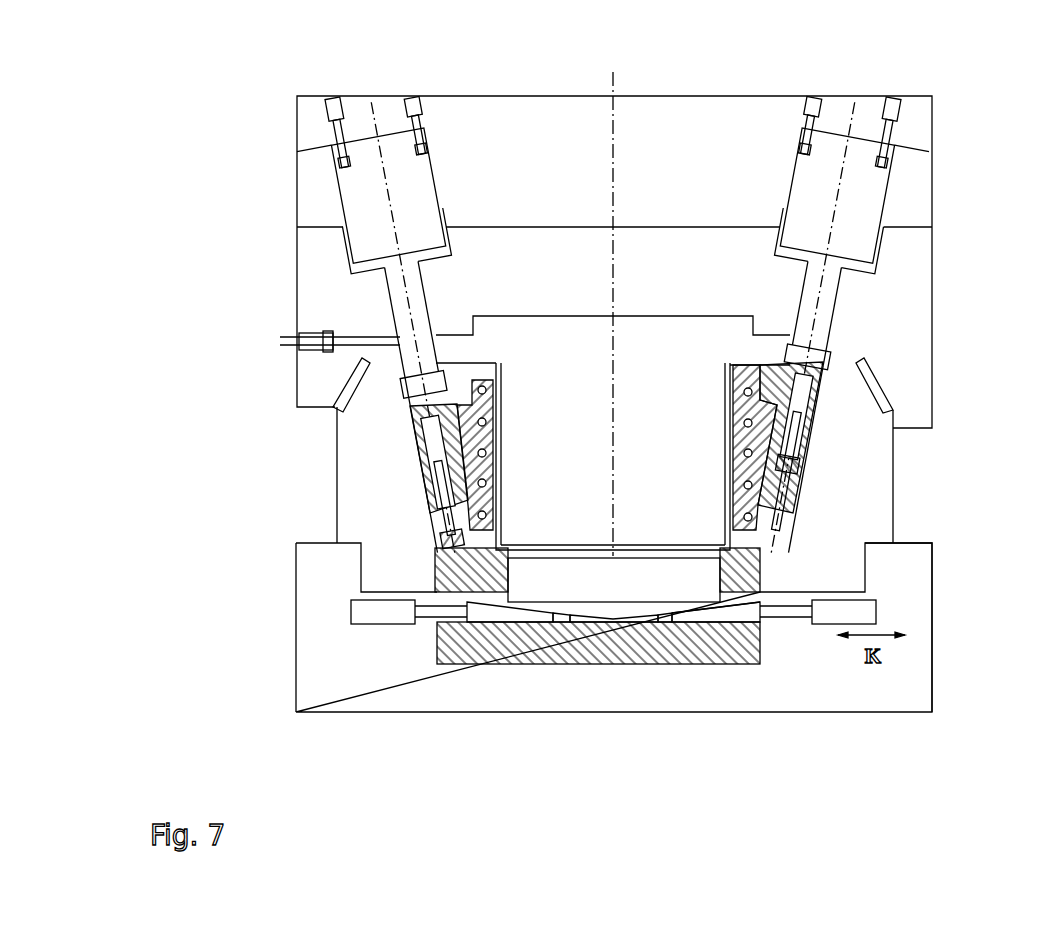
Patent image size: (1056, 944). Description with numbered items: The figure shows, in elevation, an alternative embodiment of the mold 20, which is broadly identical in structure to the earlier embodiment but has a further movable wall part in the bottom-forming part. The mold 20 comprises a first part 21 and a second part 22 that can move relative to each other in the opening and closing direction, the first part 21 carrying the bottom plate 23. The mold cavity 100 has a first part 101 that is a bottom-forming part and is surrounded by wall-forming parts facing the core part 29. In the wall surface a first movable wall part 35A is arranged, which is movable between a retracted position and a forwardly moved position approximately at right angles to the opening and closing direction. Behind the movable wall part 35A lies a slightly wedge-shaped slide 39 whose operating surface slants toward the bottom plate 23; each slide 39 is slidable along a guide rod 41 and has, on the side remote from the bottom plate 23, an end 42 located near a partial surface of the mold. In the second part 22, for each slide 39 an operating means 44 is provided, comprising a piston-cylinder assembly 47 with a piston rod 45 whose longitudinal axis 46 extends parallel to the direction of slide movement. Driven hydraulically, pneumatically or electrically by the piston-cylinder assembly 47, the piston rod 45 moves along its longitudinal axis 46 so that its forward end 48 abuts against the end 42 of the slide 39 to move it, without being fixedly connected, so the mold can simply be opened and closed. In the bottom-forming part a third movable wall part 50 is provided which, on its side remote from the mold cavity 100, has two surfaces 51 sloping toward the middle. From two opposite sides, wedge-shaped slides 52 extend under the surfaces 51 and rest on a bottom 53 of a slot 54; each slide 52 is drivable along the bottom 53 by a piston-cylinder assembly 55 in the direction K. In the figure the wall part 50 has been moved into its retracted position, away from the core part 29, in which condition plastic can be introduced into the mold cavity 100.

The mold 20 is at (232, 695).
The first part 21 is at (262, 630).
The second part 22 is at (262, 124).
The bottom plate 23 is at (905, 686).
The core part 29 is at (599, 389).
The first movable wall part 35A is at (487, 404).
The slide 39 is at (410, 416).
The guide rod 41 is at (770, 514).
The end of the slide 42 is at (827, 380).
The operating means 44 is at (920, 142).
The piston rod 45 is at (400, 296).
The longitudinal axis 46 is at (387, 158).
The piston-cylinder assembly 47 is at (425, 193).
The forward end 48 is at (798, 352).
The third movable wall part 50 is at (599, 600).
The sloping surfaces 51 is at (568, 613).
The wedge-shaped slide 52 is at (488, 612).
The bottom of the slot 53 is at (508, 622).
The slot 54 is at (732, 598).
The piston-cylinder assembly 55 is at (380, 612).
The mold cavity 100 is at (677, 553).
The first part of the mold cavity 101 is at (545, 545).